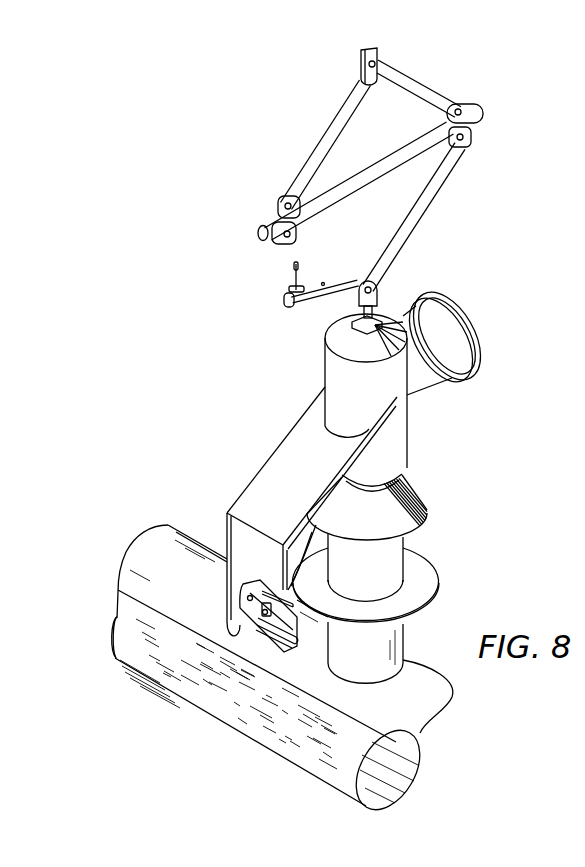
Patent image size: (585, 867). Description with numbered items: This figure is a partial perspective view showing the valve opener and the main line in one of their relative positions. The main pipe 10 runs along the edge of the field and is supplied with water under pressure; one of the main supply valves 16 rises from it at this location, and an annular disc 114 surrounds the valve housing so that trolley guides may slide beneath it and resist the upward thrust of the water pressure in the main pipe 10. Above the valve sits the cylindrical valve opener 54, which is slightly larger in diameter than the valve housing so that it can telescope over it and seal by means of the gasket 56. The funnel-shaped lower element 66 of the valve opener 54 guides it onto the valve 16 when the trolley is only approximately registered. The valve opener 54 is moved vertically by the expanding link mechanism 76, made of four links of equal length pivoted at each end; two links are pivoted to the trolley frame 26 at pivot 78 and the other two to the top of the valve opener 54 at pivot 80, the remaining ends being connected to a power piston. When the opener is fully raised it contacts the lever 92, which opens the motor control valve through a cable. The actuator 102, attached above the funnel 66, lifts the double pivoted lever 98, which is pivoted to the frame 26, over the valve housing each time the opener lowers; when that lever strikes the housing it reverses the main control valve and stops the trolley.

The main supply line or pipe 10 is at (172, 688).
The main supply ports or valves 16 is at (404, 643).
The frame 26 is at (300, 644).
The valve opener 54 is at (407, 436).
The gasket 56 is at (404, 543).
The funnel-shaped lower element 66 is at (412, 490).
The expanding link mechanism 76 is at (436, 212).
The pivot to frame 78 is at (378, 63).
The pivot to valve opener 80 is at (376, 291).
The lever 92 is at (288, 305).
The double pivoted lever 98 is at (227, 625).
The actuator 102 is at (283, 460).
The annular disc 114 is at (432, 588).